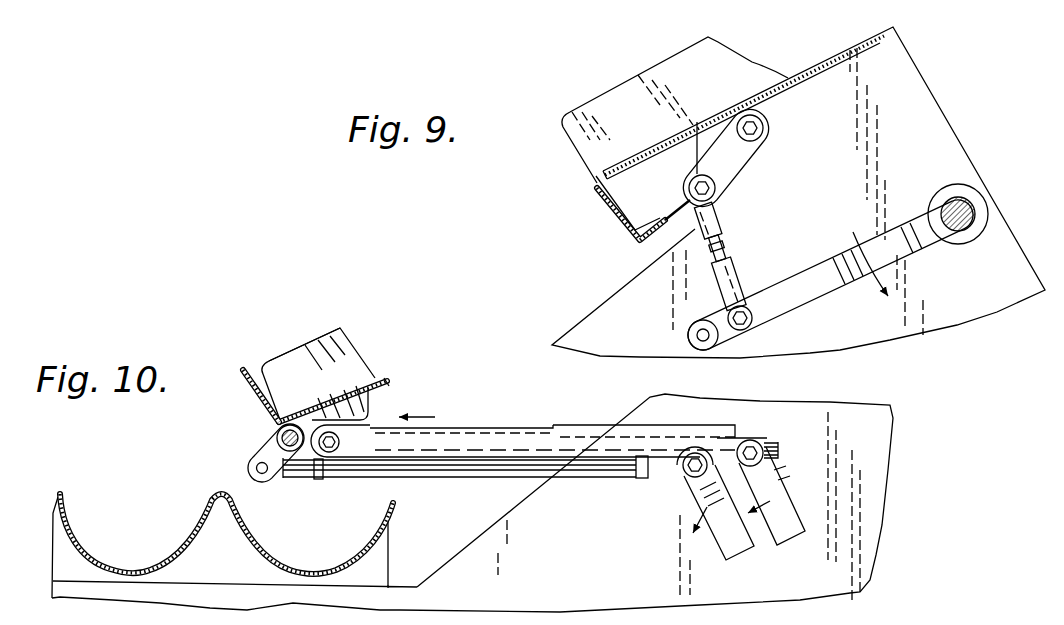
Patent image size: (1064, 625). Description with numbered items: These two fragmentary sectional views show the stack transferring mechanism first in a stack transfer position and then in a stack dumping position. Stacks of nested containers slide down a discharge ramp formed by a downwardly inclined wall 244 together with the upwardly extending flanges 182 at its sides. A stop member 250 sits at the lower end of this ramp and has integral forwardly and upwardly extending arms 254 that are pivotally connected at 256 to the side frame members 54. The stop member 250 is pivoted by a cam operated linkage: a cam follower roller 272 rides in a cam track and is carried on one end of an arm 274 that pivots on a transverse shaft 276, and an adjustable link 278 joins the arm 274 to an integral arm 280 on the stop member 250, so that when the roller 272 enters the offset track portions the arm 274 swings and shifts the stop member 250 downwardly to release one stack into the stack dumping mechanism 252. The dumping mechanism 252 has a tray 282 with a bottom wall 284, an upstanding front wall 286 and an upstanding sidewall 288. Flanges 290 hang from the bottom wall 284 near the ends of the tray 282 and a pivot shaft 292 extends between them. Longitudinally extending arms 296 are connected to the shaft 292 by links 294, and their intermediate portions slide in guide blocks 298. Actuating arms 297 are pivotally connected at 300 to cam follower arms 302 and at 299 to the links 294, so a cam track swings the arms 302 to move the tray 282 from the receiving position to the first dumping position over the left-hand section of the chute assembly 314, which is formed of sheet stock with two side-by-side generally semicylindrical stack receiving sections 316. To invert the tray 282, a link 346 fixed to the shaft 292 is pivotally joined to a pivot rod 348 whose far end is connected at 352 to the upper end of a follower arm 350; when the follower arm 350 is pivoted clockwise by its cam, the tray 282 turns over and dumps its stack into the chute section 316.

In FIG. 9, the side frame member 54 is at (926, 123).
In FIG. 10, the side frame member 54 is at (875, 487).
In FIG. 9, the upwardly extending flange 182 is at (628, 97).
In FIG. 9, the downwardly inclined wall 244 is at (748, 93).
In FIG. 9, the stop member 250 is at (610, 205).
In FIG. 10, the stack dumping mechanism 252 is at (272, 344).
In FIG. 9, the arm 254 is at (742, 146).
In FIG. 9, the pivot connection 256 is at (763, 125).
In FIG. 9, the cam follower roller 272 is at (700, 335).
In FIG. 9, the arm 274 is at (806, 306).
In FIG. 9, the shaft 276 is at (979, 201).
In FIG. 9, the adjustable link 278 is at (735, 282).
In FIG. 9, the integral arm 280 is at (715, 197).
In FIG. 10, the tray 282 is at (373, 353).
In FIG. 10, the bottom wall 284 is at (368, 380).
In FIG. 10, the upstanding front wall 286 is at (280, 407).
In FIG. 10, the upstanding sidewall 288 is at (338, 341).
In FIG. 10, the flange 290 is at (370, 410).
In FIG. 10, the pivot shaft 292 is at (276, 432).
In FIG. 10, the link 294 is at (310, 422).
In FIG. 10, the longitudinally extending arm 296 is at (499, 436).
In FIG. 10, the actuating arm 297 is at (443, 432).
In FIG. 10, the guide block 298 is at (567, 420).
In FIG. 10, the pivot connection 299 is at (349, 459).
In FIG. 10, the pivot connection 300 is at (775, 451).
In FIG. 10, the cam follower arm 302 is at (772, 484).
In FIG. 10, the chute assembly 314 is at (108, 468).
In FIG. 10, the stack receiving section 316 is at (262, 556).
In FIG. 10, the link 346 is at (266, 452).
In FIG. 10, the pivot rod 348 is at (432, 468).
In FIG. 10, the follower arm 350 is at (700, 497).
In FIG. 10, the pivot connection 352 is at (690, 474).